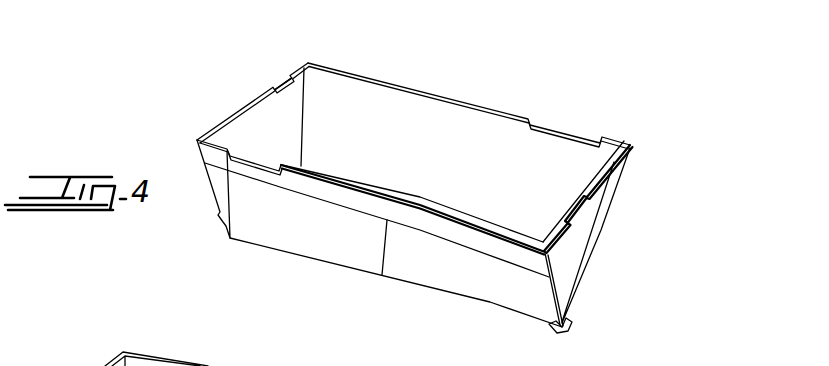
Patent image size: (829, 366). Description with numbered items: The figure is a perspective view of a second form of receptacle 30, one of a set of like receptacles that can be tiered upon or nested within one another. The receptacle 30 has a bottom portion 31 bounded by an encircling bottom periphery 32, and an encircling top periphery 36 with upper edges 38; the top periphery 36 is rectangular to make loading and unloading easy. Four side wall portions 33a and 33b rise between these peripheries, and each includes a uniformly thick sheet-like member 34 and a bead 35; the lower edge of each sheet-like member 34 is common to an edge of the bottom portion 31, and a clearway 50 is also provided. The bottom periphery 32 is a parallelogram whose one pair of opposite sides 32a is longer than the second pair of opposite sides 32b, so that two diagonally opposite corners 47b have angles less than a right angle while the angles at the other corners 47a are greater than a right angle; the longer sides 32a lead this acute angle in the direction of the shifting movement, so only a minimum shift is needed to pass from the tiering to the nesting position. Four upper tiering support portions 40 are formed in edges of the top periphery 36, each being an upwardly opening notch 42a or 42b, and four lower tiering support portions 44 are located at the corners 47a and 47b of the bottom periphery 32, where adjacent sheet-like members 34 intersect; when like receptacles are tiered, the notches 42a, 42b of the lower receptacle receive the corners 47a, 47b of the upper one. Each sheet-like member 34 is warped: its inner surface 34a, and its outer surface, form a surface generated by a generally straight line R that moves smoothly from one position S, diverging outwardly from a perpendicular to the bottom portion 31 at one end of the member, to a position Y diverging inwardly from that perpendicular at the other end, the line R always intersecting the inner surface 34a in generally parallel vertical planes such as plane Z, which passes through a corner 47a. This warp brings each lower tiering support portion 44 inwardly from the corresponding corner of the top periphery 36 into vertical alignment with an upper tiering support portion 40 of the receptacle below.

The receptacle 30 is at (620, 176).
The bottom portion 31 is at (512, 230).
The bottom periphery 32 is at (566, 329).
The longer opposite sides of bottom periphery 32a is at (410, 287).
The shorter opposite sides of bottom periphery 32b is at (587, 278).
The side wall portion 33a is at (428, 133).
The side wall portion 33b is at (238, 116).
The sheet-like member 34 is at (308, 230).
The inner surface 34a is at (357, 117).
The bead 35 is at (288, 175).
The top periphery 36 is at (318, 62).
The upper edges 38 is at (632, 150).
The upper tiering support portion 40 is at (281, 92).
The notch 42a is at (545, 130).
The notch 42b is at (277, 91).
The lower tiering support portion 44 is at (230, 240).
The corner of bottom periphery 47a is at (234, 234).
The corner of bottom periphery 47b is at (559, 322).
The clearway 50 is at (473, 132).
The straight line R is at (226, 198).
The position of line R S is at (555, 294).
The position of line R Y is at (225, 213).
The plane Z is at (224, 221).